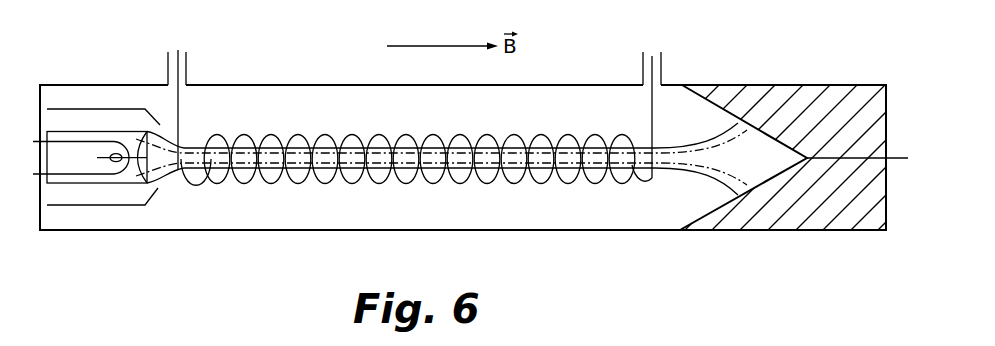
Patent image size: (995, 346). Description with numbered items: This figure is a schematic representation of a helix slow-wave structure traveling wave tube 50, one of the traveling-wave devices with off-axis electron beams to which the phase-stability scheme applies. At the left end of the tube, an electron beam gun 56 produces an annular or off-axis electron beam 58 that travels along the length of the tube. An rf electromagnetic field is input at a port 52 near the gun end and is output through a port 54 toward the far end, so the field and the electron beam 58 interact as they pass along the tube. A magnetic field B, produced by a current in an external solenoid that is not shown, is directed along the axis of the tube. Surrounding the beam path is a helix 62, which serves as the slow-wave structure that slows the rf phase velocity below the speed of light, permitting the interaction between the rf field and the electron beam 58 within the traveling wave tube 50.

The traveling wave tube 50 is at (274, 70).
The input port 52 is at (178, 38).
The output port 54 is at (652, 37).
The electron beam gun 56 is at (125, 221).
The electron beam 58 is at (297, 178).
The helix 62 is at (541, 195).